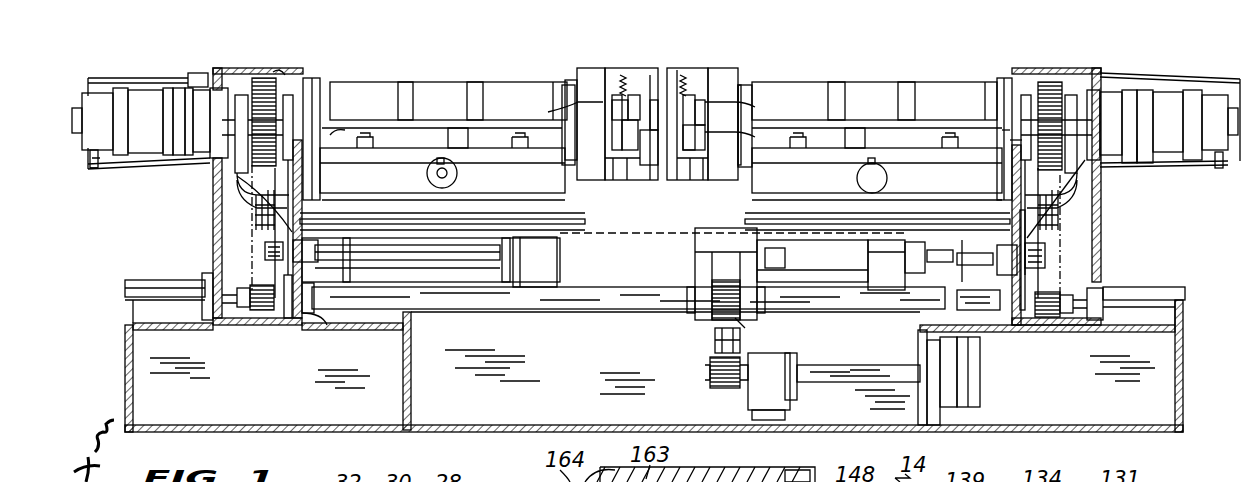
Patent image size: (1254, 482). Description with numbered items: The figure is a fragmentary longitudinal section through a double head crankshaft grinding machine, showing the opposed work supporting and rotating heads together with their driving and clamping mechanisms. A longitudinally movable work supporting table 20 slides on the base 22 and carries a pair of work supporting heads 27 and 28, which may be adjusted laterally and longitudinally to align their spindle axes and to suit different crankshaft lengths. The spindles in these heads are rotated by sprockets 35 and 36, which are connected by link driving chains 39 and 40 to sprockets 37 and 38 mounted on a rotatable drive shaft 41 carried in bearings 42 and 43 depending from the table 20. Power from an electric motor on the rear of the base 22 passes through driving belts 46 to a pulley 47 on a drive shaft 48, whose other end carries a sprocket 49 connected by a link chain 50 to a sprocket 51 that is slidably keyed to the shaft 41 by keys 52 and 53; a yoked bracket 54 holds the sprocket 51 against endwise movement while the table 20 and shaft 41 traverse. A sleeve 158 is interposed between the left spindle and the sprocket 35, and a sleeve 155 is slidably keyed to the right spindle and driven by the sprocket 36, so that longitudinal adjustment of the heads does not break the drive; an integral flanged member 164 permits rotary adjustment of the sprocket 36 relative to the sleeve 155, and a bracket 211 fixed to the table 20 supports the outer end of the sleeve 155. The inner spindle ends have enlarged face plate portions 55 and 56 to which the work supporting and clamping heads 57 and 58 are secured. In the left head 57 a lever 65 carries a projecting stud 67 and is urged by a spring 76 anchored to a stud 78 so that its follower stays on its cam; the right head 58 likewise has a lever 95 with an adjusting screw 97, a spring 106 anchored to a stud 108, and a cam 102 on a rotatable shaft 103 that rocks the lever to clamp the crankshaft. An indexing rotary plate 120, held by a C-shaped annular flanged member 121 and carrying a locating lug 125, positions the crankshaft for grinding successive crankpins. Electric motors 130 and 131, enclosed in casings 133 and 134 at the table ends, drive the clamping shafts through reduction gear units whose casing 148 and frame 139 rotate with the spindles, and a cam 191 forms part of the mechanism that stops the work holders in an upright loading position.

The base 22 is at (124, 366).
The electric motor 130 is at (143, 96).
The enclosed casing 133 is at (118, 78).
The link driving chain 39 is at (252, 222).
The sprocket 35 is at (262, 78).
The cam 191 is at (284, 75).
The sprocket 37 is at (262, 285).
The work supporting head 27 is at (447, 96).
The sleeve 158 is at (343, 132).
The work supporting head 28 is at (872, 96).
The sleeve 155 is at (1008, 137).
The flanged member 164 is at (1010, 141).
The work supporting and clamping head 57 is at (590, 65).
The face plate portion 55 is at (574, 77).
The lever 65 is at (561, 106).
The spring 76 is at (613, 95).
The stud 78 is at (622, 76).
The projecting stud 67 is at (634, 94).
The C-shaped annular flanged member 121 is at (644, 129).
The rotary plate 120 is at (618, 166).
The locating lug 125 is at (654, 139).
The work supporting and clamping head 58 is at (731, 66).
The face plate portion 56 is at (740, 74).
The adjusting screw 97 is at (679, 76).
The stud 108 is at (692, 85).
The spring 106 is at (696, 101).
The cam 102 is at (703, 168).
The lever 95 is at (755, 107).
The rotatable shaft 103 is at (755, 137).
The electric motor 131 is at (1183, 97).
The enclosed casing 134 is at (1190, 94).
The casing 148 is at (1108, 96).
The frame 139 is at (1135, 155).
The sprocket 36 is at (1050, 81).
The link driving chain 40 is at (1062, 220).
The bracket 211 is at (1075, 193).
The sprocket 38 is at (1050, 288).
The drive shaft 41 is at (493, 300).
The yoked bracket 54 is at (610, 316).
The work supporting table 20 is at (555, 267).
The key 53 is at (698, 271).
The key 52 is at (686, 322).
The sprocket 51 is at (741, 327).
The link chain 50 is at (713, 342).
The sprocket 49 is at (714, 388).
The drive shaft 48 is at (812, 372).
The bearing 43 is at (998, 332).
The pulley 47 is at (978, 381).
The driving belts 46 is at (968, 396).
The bearing 42 is at (323, 327).